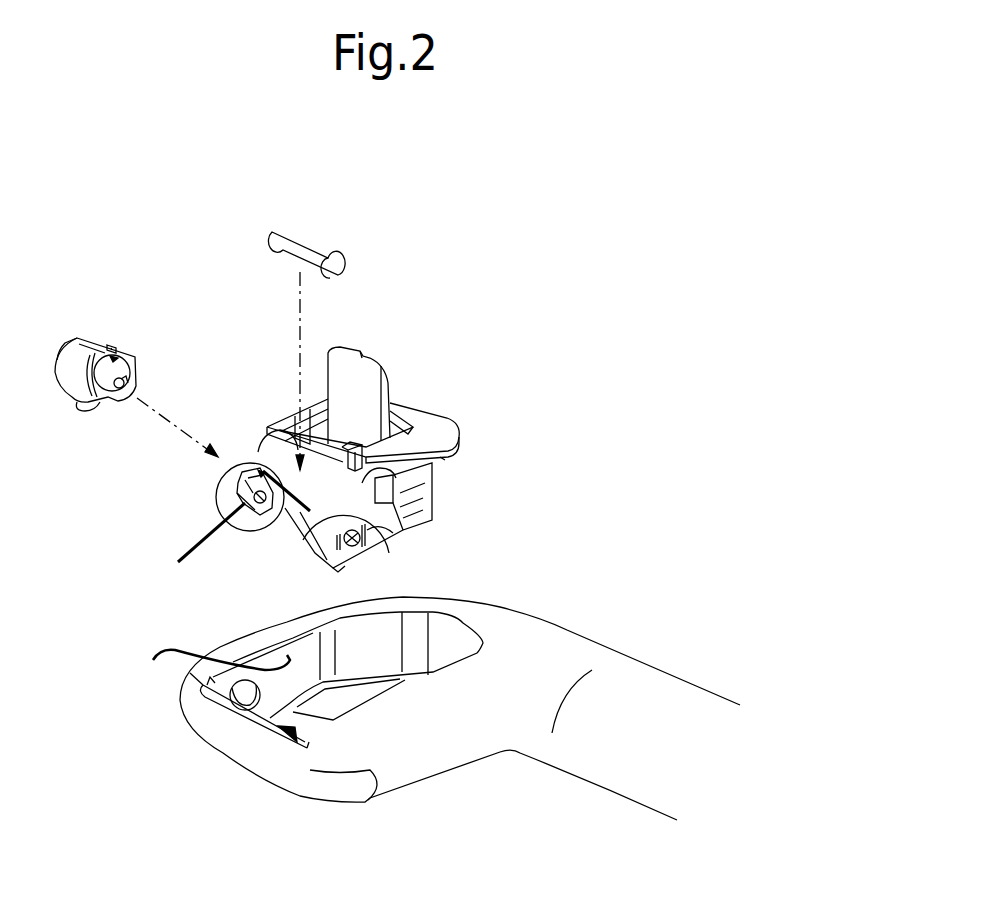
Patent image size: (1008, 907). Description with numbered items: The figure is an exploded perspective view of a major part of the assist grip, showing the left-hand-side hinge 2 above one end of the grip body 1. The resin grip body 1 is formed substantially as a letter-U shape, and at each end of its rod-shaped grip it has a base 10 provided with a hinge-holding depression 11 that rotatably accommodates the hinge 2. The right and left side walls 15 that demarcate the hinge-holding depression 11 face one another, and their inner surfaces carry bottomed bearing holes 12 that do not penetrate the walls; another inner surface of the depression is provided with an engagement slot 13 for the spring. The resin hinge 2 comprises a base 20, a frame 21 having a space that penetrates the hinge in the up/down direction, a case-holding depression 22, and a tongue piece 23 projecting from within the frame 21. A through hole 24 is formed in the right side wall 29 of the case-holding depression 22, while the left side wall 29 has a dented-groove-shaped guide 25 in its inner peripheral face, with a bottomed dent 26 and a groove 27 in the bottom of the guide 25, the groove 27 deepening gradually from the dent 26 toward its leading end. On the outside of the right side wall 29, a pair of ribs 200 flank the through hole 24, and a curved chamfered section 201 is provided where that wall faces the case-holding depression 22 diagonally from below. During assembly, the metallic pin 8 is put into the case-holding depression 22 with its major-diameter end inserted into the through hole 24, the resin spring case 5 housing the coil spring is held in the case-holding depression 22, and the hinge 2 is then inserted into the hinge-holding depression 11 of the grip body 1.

The grip body 1 is at (627, 668).
The hinge 2 is at (355, 462).
The spring case 5 is at (93, 338).
The pin 8 is at (290, 248).
The base 10 is at (402, 732).
The hinge-holding depression 11 is at (380, 667).
The bottomed bearing hole 12 is at (203, 690).
The engagement slot for spring 13 is at (280, 728).
The side wall 15 is at (209, 671).
The base 20 is at (432, 440).
The frame 21 is at (452, 460).
The case-holding depression 22 is at (266, 516).
The tongue piece 23 is at (387, 380).
The through hole 24 is at (372, 542).
The guide 25 is at (250, 462).
The bottomed dent 26 is at (259, 511).
The groove 27 is at (236, 494).
The side wall 29 is at (200, 545).
The rib 200 is at (393, 533).
The chamfered section 201 is at (352, 566).